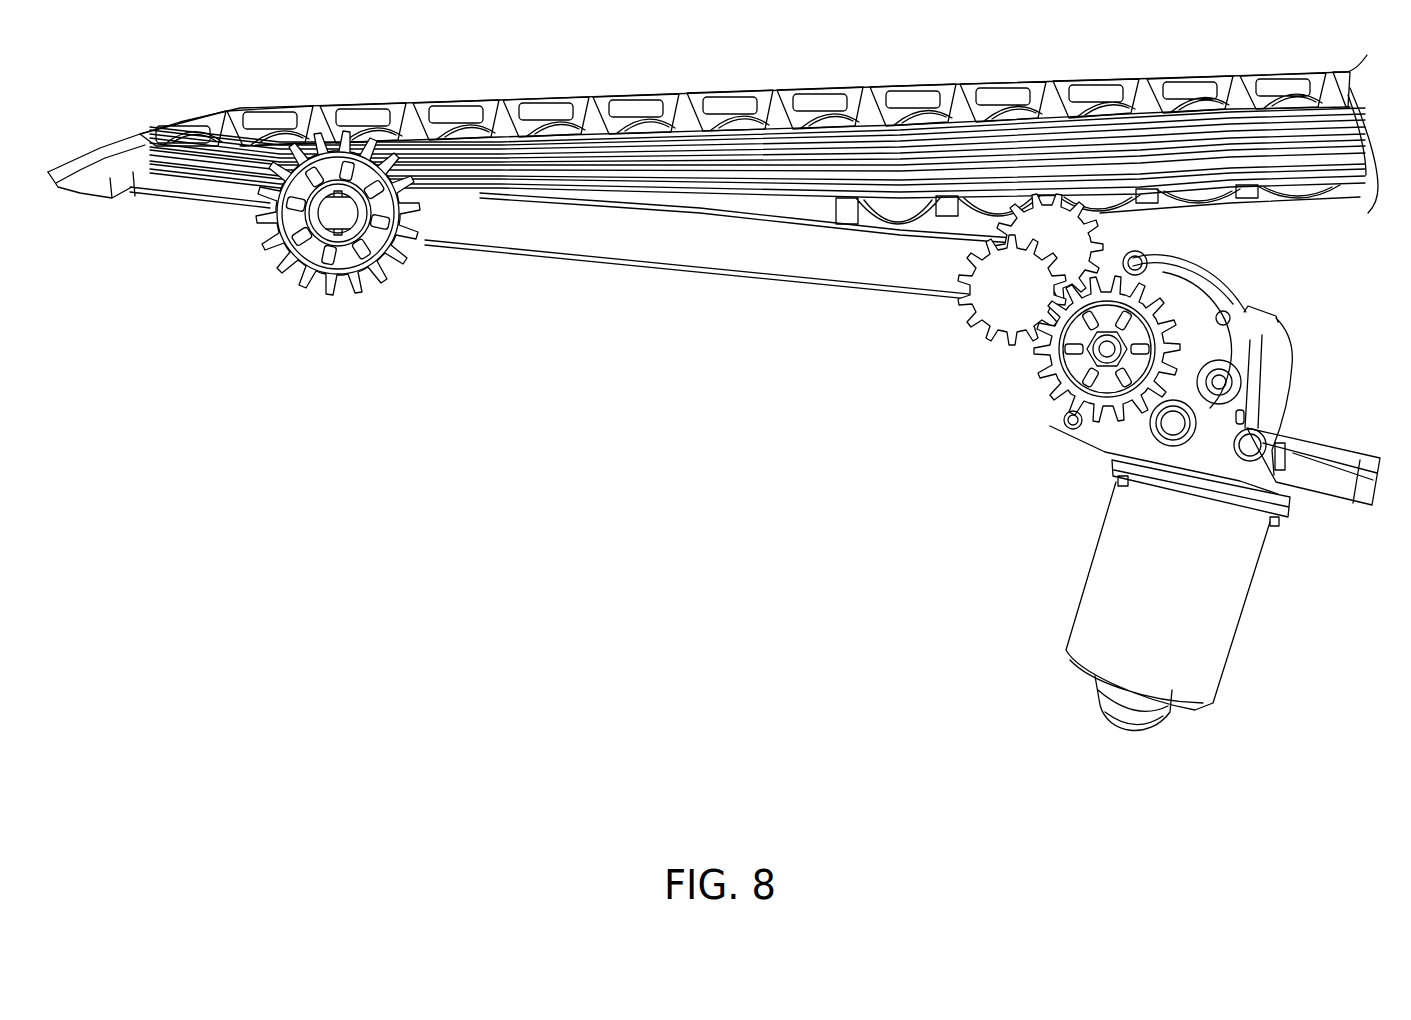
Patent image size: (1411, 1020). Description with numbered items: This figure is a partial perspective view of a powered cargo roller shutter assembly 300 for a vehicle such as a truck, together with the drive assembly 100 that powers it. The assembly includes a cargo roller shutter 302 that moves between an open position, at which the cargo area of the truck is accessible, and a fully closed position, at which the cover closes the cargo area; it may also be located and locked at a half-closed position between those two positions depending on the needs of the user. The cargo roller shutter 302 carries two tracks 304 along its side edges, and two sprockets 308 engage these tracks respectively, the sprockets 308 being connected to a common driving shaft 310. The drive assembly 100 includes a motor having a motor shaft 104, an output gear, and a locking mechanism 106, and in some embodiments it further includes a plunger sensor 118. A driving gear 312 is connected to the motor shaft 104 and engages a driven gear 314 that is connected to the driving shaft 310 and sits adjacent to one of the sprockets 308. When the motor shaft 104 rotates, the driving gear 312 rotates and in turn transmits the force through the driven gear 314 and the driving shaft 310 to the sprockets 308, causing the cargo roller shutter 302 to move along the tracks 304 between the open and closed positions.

The powered cargo roller shutter assembly 300 is at (1022, 56).
The cargo roller shutter 302 is at (1323, 137).
The tracks 304 is at (1192, 88).
The sprockets 308 is at (325, 290).
The driving shaft 310 is at (702, 250).
The driving gear 312 is at (1080, 390).
The driven gear 314 is at (985, 327).
The drive assembly 100 is at (1305, 390).
The motor shaft 104 is at (1063, 426).
The locking mechanism 106 is at (1310, 503).
The plunger sensor 118 is at (1255, 425).